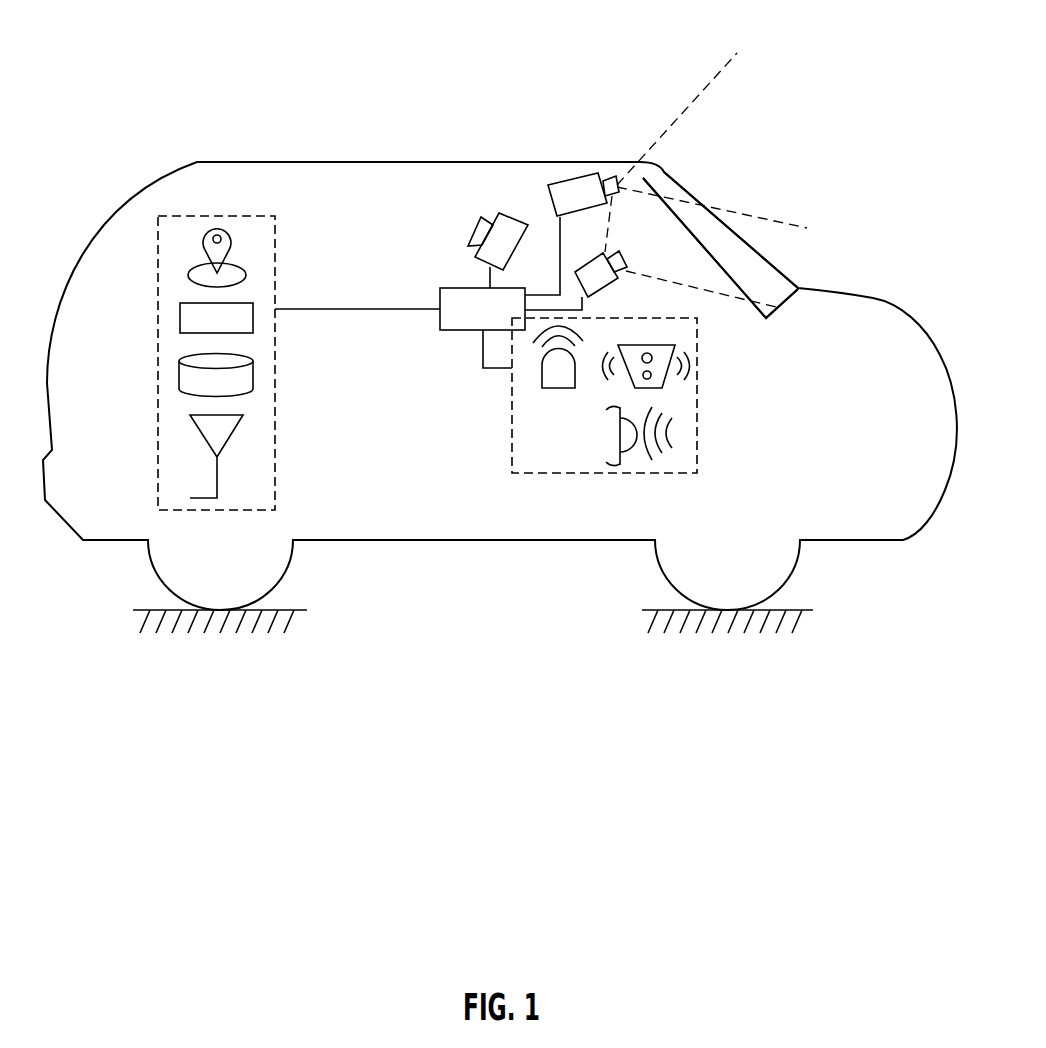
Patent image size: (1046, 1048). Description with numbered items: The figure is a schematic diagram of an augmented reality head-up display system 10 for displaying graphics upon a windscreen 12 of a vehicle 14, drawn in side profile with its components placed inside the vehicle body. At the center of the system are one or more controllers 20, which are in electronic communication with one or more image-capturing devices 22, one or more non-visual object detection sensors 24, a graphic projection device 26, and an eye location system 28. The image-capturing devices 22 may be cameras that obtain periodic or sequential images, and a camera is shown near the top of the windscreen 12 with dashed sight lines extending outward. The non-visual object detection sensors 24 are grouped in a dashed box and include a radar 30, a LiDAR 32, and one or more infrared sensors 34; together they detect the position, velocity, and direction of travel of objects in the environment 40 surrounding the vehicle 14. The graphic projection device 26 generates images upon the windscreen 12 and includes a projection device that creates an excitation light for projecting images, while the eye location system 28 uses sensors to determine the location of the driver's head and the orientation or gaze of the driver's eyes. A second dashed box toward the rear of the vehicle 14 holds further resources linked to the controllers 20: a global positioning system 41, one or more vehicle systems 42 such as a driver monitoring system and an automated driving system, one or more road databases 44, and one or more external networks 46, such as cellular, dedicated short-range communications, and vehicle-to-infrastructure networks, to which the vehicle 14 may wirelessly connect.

The augmented reality head-up display system 10 is at (702, 168).
The windscreen 12 is at (763, 272).
The vehicle 14 is at (197, 160).
The controllers 20 is at (455, 330).
The image-capturing devices 22 is at (573, 177).
The non-visual object detection sensors 24 is at (515, 477).
The graphic projection device 26 is at (615, 287).
The eye location system 28 is at (520, 237).
The radar 30 is at (565, 388).
The LiDAR 32 is at (675, 345).
The infrared sensors 34 is at (608, 467).
The environment 40 is at (857, 50).
The global positioning system 41 is at (247, 273).
The vehicle systems 42 is at (180, 320).
The road databases 44 is at (253, 378).
The external networks 46 is at (217, 482).